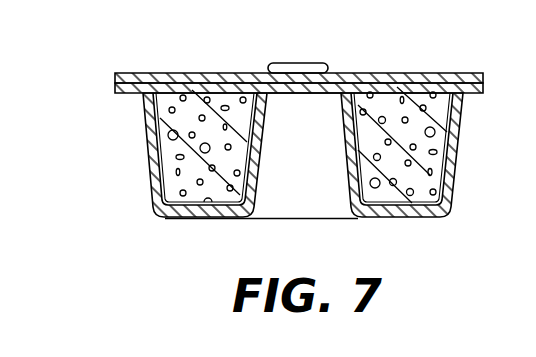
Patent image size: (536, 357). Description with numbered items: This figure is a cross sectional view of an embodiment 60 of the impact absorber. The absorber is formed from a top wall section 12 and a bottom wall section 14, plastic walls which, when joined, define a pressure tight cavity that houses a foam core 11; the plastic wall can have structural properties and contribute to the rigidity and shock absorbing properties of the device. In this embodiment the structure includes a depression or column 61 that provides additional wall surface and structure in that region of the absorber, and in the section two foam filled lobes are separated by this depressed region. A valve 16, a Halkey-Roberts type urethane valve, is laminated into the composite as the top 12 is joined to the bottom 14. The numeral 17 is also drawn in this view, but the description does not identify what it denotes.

The foam core 11 is at (456, 181).
The top wall section 12 is at (436, 74).
The bottom wall section 14 is at (470, 90).
The valve 16 is at (321, 64).
The insulating foam fill 17 is at (418, 213).
The impact absorber embodiment 60 is at (292, 137).
The column 61 is at (281, 108).